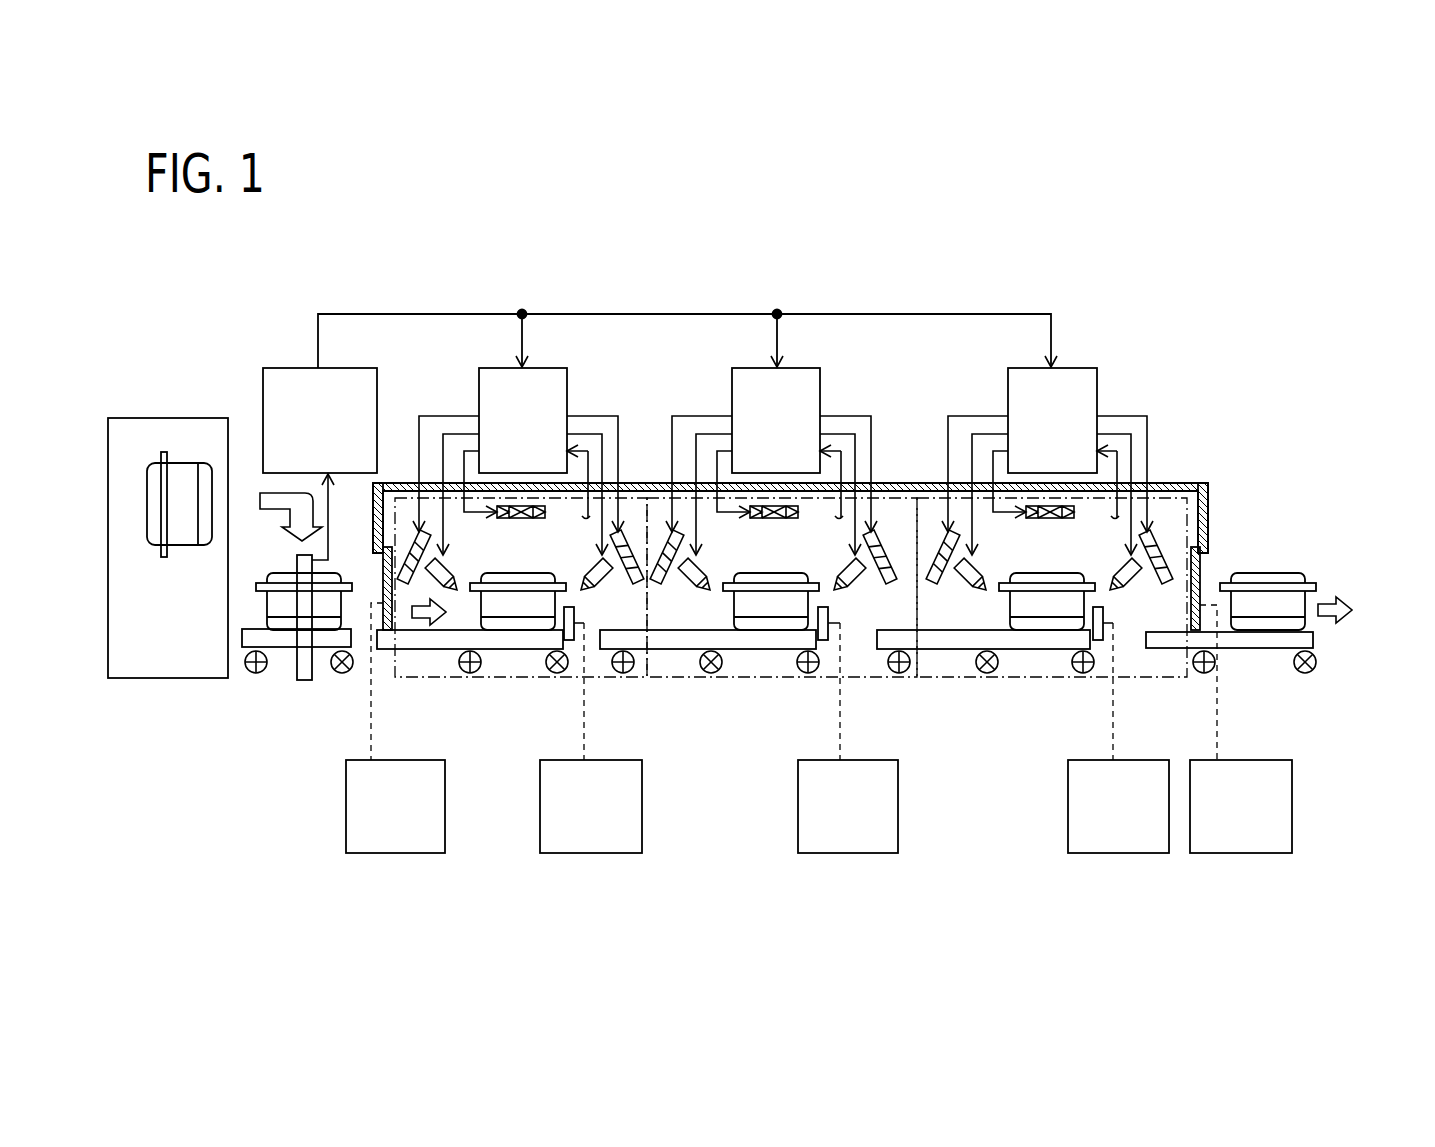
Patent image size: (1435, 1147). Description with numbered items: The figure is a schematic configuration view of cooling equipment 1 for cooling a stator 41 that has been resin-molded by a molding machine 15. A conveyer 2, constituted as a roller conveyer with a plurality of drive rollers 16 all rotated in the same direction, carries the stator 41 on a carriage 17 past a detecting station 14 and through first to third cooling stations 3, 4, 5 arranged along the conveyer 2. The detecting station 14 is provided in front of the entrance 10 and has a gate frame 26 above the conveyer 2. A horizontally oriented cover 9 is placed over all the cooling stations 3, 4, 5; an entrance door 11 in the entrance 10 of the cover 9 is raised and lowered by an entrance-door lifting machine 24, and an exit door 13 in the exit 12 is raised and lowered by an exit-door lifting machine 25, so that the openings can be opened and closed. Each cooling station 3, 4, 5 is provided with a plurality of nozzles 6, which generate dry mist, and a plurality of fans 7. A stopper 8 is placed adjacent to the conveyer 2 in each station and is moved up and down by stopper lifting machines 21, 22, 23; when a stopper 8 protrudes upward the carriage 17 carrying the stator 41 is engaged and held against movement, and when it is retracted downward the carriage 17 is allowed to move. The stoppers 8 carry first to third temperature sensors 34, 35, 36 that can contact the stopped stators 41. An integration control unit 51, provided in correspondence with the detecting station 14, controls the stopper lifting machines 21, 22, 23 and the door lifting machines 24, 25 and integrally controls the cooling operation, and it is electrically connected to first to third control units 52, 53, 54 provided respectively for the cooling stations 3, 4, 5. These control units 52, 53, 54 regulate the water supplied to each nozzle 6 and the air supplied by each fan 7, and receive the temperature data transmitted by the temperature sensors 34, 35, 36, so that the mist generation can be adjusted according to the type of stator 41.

The cooling equipment 1 is at (1082, 276).
The conveyer 2 is at (1320, 664).
The first cooling station 3 is at (491, 686).
The second cooling station 4 is at (753, 686).
The third cooling station 5 is at (1032, 686).
The nozzle 6 is at (450, 562).
The fan 7 is at (412, 580).
The stopper 8 is at (580, 622).
The cover 9 is at (1188, 482).
The entrance 10 is at (372, 555).
The entrance door 11 is at (383, 604).
The exit 12 is at (1206, 556).
The exit door 13 is at (1202, 584).
The detecting station 14 is at (296, 718).
The molding machine 15 is at (140, 425).
The drive roller 16 is at (252, 674).
The carriage 17 is at (327, 670).
The stopper lifting machine 21 is at (586, 853).
The stopper lifting machine 22 is at (836, 853).
The stopper lifting machine 23 is at (1106, 853).
The entrance-door lifting machine 24 is at (388, 853).
The exit-door lifting machine 25 is at (1228, 853).
The gate frame 26 is at (298, 680).
The first temperature sensor 34 is at (564, 606).
The second temperature sensor 35 is at (814, 608).
The third temperature sensor 36 is at (1094, 610).
The stator 41 is at (192, 546).
The integration control unit 51 is at (350, 374).
The first control unit 52 is at (550, 377).
The second control unit 53 is at (807, 377).
The third control unit 54 is at (1088, 374).